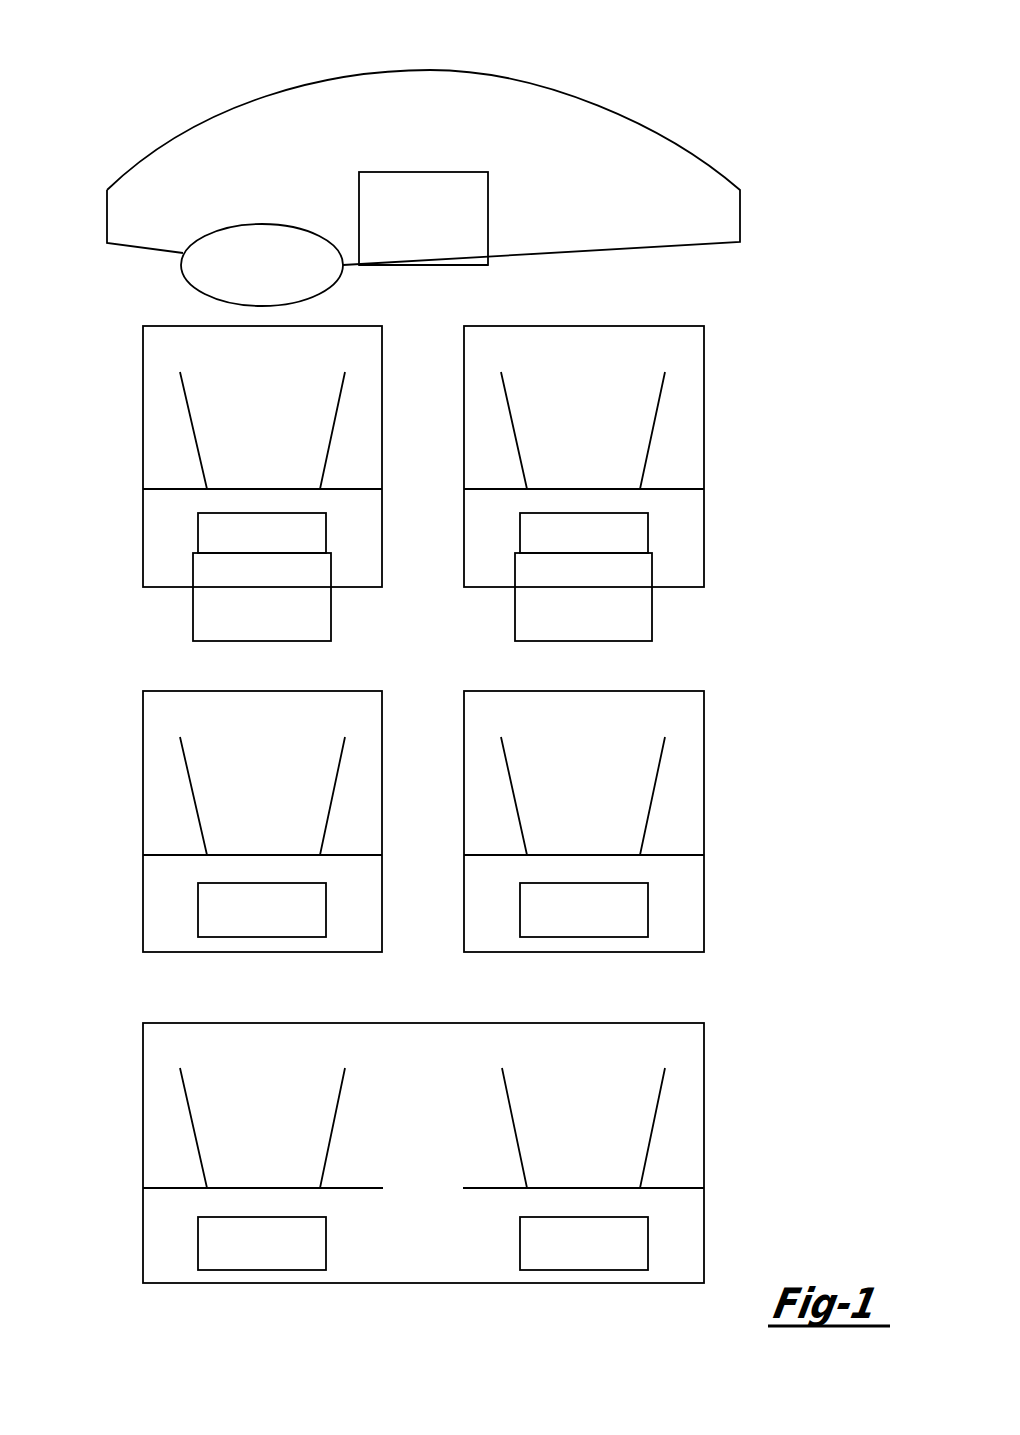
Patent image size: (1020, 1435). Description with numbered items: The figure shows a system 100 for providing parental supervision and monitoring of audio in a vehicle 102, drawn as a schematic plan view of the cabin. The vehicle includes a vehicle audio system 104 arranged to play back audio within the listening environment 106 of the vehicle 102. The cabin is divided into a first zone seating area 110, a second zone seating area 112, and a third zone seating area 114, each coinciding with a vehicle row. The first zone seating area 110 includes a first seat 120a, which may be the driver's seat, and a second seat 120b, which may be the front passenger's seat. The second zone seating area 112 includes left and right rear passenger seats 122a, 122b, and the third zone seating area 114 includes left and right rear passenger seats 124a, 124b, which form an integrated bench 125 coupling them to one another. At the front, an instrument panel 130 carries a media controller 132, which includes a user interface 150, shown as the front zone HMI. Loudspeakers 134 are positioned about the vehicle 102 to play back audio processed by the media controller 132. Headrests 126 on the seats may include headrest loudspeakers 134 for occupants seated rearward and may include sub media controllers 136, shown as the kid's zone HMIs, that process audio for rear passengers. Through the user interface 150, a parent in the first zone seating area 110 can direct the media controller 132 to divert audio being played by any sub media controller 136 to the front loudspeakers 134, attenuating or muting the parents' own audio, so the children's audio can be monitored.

The system 100 is at (632, 52).
The vehicle 102 is at (438, 41).
The vehicle audio system 104 is at (173, 94).
The listening environment 106 is at (748, 323).
The first zone seating area 110 is at (740, 424).
The second zone seating area 112 is at (740, 818).
The third zone seating area 114 is at (740, 1156).
The first seat 120a is at (173, 326).
The second seat 120b is at (670, 326).
The first seat 122a is at (325, 691).
The second seat 122b is at (523, 691).
The first seat 124a is at (250, 1023).
The second seat 124b is at (596, 1023).
The integrated bench 125 is at (423, 1023).
The headrest 126 is at (198, 533).
The instrument panel 130 is at (613, 128).
The media controller 132 is at (438, 144).
The loudspeaker 134 is at (275, 194).
The sub media controller 136 is at (193, 632).
The user interface 150 is at (465, 172).